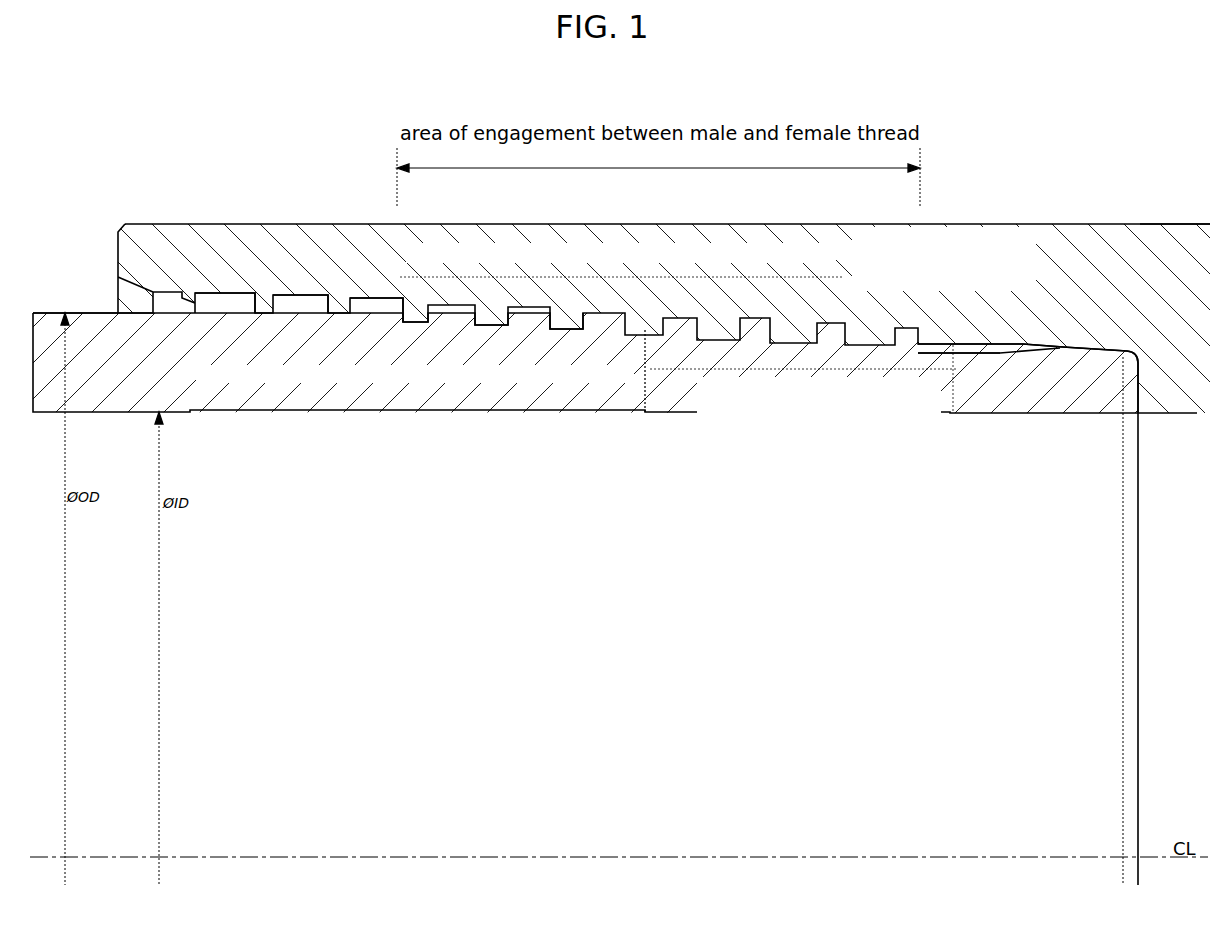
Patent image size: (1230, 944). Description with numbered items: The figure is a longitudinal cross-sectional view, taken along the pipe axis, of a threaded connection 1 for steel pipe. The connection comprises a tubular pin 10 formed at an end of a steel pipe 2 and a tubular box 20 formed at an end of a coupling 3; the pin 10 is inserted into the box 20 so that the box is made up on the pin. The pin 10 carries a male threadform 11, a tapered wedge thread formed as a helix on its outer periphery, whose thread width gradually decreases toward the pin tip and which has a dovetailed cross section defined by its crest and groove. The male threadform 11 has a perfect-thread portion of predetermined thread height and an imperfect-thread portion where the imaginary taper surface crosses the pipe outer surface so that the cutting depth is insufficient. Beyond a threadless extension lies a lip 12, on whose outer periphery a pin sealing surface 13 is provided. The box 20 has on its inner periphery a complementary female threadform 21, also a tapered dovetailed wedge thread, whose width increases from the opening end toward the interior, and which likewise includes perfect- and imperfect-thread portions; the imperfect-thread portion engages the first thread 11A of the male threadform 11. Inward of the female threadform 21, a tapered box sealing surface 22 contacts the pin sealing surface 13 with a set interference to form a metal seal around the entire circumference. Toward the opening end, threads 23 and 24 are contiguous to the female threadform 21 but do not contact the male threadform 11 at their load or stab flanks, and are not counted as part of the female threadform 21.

The threaded connection 1 is at (133, 172).
The steel pipe 2 is at (97, 313).
The coupling 3 is at (1150, 216).
The pin 10 is at (678, 420).
The male threadform 11 is at (645, 408).
The first thread 11A is at (942, 346).
The lip 12 is at (1037, 413).
The pin sealing surface 13 is at (1093, 367).
The box 20 is at (295, 218).
The female threadform 21 is at (375, 293).
The box sealing surface 22 is at (1040, 343).
The thread 23 is at (315, 305).
The thread 24 is at (240, 298).